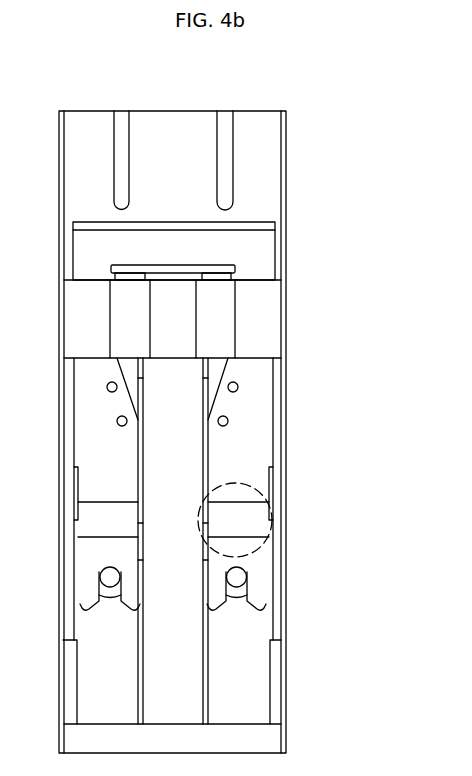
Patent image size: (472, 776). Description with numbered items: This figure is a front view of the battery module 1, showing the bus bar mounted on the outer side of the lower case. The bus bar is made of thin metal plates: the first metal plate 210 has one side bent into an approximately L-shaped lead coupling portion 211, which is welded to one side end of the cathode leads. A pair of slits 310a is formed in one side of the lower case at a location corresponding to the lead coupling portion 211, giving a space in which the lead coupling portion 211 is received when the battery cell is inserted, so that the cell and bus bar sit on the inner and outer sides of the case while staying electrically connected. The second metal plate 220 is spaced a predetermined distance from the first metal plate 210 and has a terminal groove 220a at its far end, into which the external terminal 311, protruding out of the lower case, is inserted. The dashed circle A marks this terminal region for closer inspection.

The battery module 1 is at (91, 89).
The lead coupling portion 211 is at (270, 413).
The first metal plate 210 is at (244, 448).
The slit 310a is at (268, 485).
The detail region A is at (270, 515).
The second metal plate 220 is at (237, 547).
The external terminal 311 is at (236, 577).
The terminal groove 220a is at (239, 599).